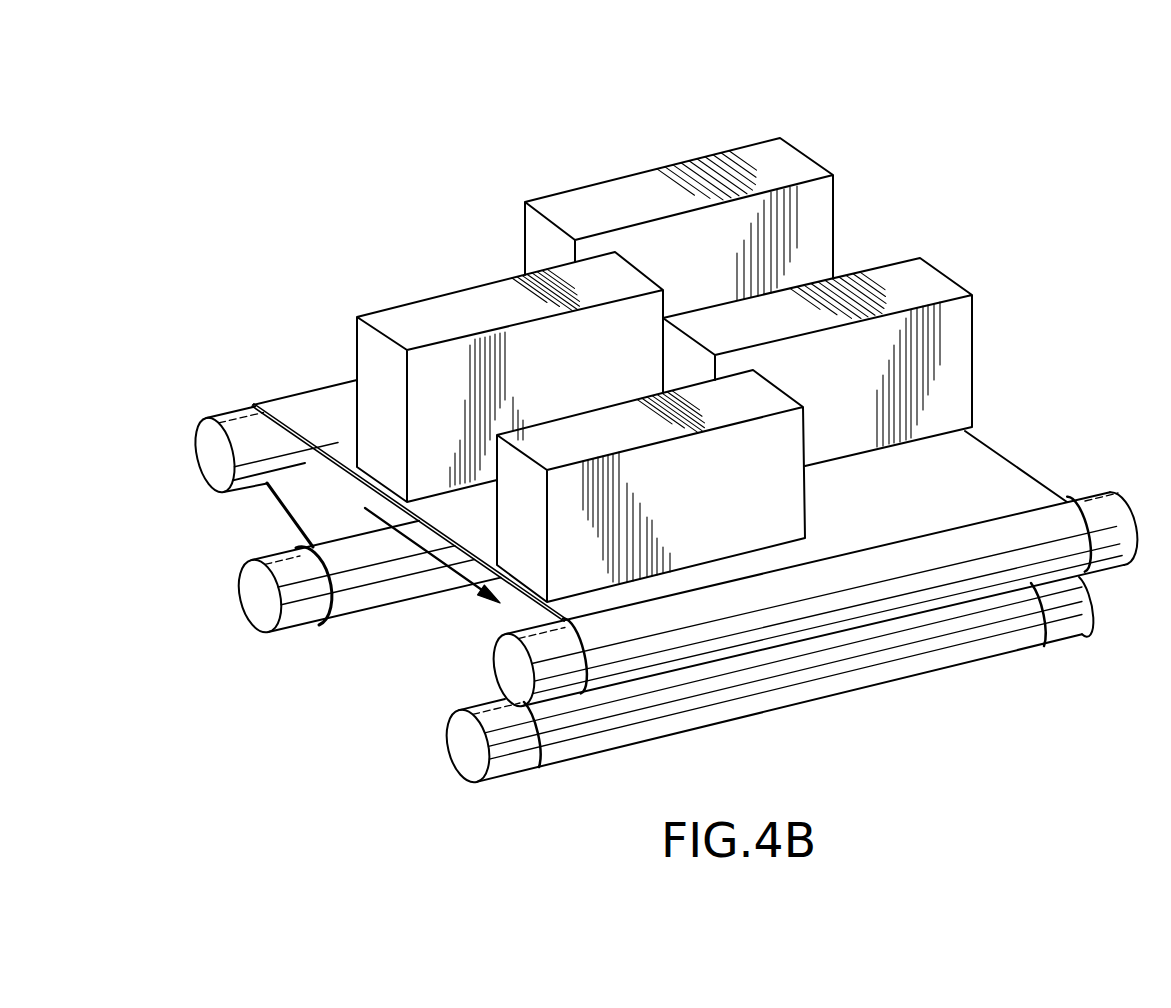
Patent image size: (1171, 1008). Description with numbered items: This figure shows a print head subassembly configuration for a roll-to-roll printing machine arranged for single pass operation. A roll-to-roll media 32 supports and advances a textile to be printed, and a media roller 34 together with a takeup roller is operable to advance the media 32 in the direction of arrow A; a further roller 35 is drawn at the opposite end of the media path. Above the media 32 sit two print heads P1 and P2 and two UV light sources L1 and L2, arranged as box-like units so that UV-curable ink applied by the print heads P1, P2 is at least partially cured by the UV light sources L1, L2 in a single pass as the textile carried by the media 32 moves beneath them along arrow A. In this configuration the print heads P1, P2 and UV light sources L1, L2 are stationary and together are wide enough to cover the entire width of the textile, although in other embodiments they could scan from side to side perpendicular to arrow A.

The print head P1 is at (807, 157).
The print head P2 is at (412, 300).
The UV light source L1 is at (947, 272).
The UV light source L2 is at (805, 502).
The roll-to-roll media 32 is at (1040, 482).
The media roller 34 is at (251, 621).
The conveyor roller 35 is at (466, 779).
The arrow A is at (415, 548).